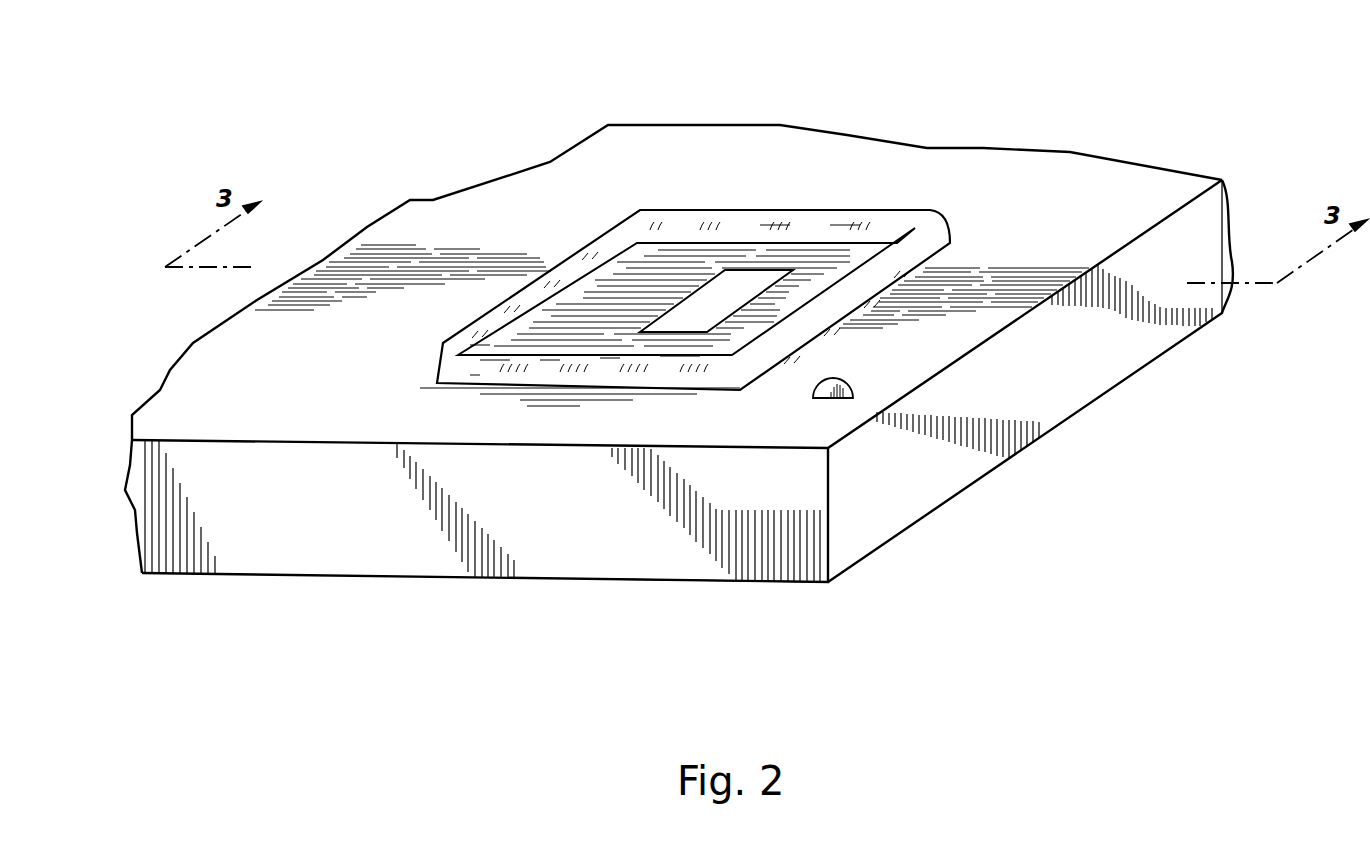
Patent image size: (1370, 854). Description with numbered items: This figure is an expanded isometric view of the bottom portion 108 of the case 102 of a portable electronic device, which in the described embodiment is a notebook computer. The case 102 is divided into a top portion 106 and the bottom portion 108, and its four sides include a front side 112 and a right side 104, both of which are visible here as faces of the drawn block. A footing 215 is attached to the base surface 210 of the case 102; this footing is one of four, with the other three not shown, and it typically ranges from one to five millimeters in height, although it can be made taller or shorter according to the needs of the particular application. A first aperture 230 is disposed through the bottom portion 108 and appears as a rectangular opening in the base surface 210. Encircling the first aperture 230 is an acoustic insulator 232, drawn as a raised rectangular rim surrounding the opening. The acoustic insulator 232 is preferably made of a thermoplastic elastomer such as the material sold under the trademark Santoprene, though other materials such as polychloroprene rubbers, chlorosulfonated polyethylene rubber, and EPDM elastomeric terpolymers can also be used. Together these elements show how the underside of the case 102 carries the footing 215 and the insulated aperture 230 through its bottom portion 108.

The case 102 is at (813, 127).
The right side 104 is at (325, 523).
The top portion 106 is at (694, 582).
The bottom portion 108 is at (1165, 215).
The front side 112 is at (900, 503).
The base surface 210 is at (215, 390).
The footing 215 is at (847, 383).
The first aperture 230 is at (738, 290).
The acoustic insulator 232 is at (713, 220).